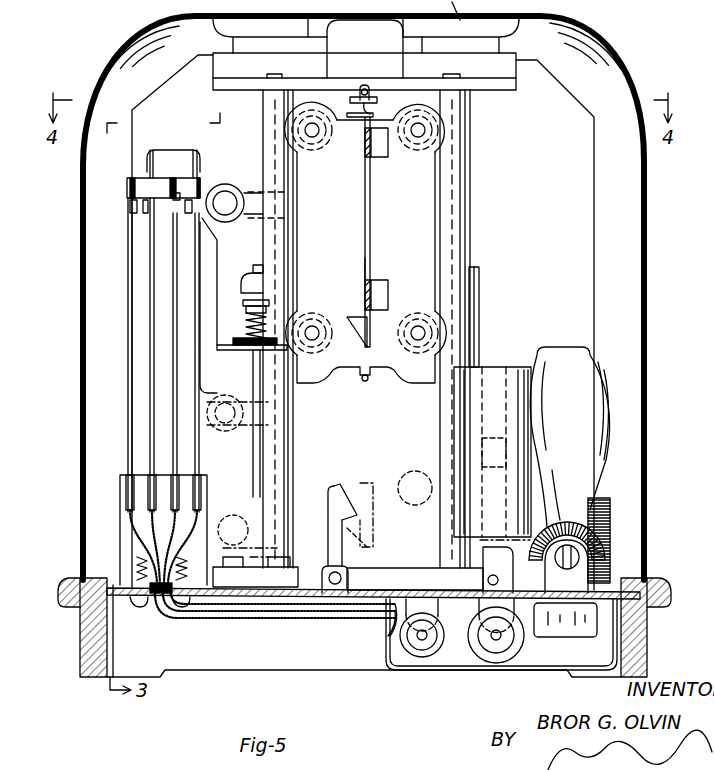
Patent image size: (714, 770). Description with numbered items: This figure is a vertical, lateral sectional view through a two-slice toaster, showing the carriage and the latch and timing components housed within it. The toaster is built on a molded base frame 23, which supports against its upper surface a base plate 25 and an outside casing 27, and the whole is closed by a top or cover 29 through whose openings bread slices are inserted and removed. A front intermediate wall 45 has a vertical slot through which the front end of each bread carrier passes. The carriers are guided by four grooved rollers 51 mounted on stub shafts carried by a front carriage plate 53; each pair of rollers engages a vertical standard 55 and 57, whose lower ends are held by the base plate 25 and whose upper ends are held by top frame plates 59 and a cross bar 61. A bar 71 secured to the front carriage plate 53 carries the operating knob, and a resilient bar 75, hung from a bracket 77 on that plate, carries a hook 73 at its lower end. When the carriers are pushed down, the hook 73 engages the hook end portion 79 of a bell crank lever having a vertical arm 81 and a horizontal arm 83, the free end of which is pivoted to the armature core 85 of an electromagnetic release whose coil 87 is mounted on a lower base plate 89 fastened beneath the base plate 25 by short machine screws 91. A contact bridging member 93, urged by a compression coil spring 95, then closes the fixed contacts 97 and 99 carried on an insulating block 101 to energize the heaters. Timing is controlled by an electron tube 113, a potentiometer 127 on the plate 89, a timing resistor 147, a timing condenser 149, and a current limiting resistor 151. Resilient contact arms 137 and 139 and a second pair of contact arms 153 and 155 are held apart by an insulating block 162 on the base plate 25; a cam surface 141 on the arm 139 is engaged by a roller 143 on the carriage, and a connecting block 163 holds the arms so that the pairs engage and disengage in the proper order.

The base frame 23 is at (647, 627).
The base plate 25 is at (128, 600).
The outside casing 27 is at (80, 224).
The top or cover 29 is at (596, 34).
The front intermediate wall 45 is at (595, 236).
The grooved rollers 51 is at (441, 124).
The front carriage plate 53 is at (435, 207).
The vertical standard 55 is at (266, 118).
The vertical standard 57 is at (471, 186).
The top frame plates 59 is at (400, 51).
The cross bar 61 is at (371, 86).
The bar 71 is at (363, 268).
The hook 73 is at (350, 312).
The resilient bar 75 is at (371, 252).
The bracket 77 is at (362, 160).
The hook end portion 79 is at (350, 490).
The vertical arm 81 is at (328, 517).
The horizontal arm 83 is at (388, 568).
The armature core 85 is at (470, 478).
The coil 87 is at (458, 410).
The base plate 89 is at (385, 626).
The short machine screws 91 is at (300, 604).
The contact bridging member 93 is at (252, 417).
The compression coil spring 95 is at (246, 321).
The fixed contact 97 is at (220, 556).
The fixed contact 99 is at (290, 558).
The block of electric-insulating material 101 is at (235, 590).
The electron tube 113 is at (555, 347).
The potentiometer 127 is at (565, 522).
The resilient contact arm 137 is at (173, 338).
The resilient contact arm 139 is at (195, 375).
The cam surface 141 is at (220, 245).
The roller 143 is at (226, 184).
The timing resistor 147 is at (418, 660).
The timing condenser 149 is at (480, 660).
The current limiting resistor 151 is at (613, 506).
The resilient contact arm 153 is at (128, 276).
The resilient contact arm 155 is at (150, 310).
The block of electric-insulating material 162 is at (120, 478).
The connecting block 163 is at (171, 151).